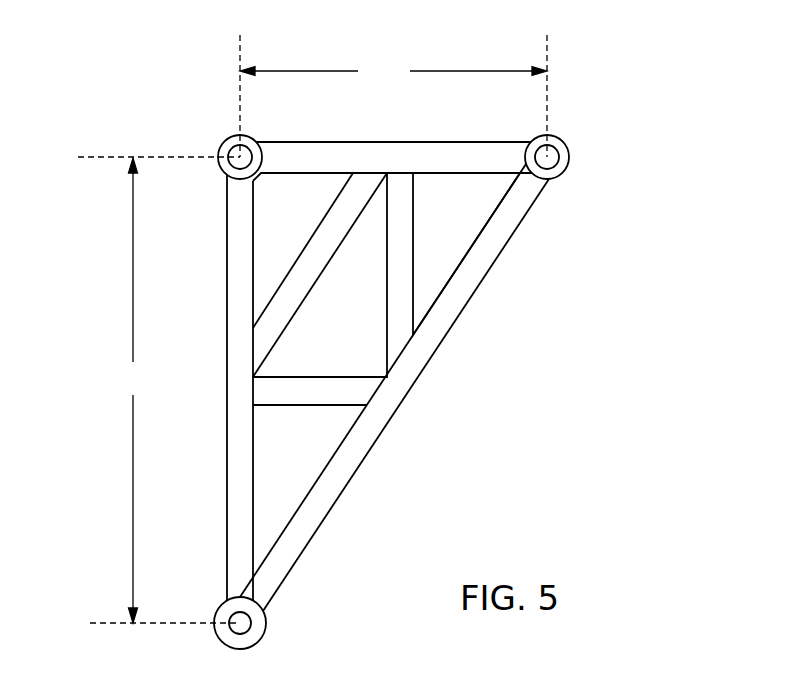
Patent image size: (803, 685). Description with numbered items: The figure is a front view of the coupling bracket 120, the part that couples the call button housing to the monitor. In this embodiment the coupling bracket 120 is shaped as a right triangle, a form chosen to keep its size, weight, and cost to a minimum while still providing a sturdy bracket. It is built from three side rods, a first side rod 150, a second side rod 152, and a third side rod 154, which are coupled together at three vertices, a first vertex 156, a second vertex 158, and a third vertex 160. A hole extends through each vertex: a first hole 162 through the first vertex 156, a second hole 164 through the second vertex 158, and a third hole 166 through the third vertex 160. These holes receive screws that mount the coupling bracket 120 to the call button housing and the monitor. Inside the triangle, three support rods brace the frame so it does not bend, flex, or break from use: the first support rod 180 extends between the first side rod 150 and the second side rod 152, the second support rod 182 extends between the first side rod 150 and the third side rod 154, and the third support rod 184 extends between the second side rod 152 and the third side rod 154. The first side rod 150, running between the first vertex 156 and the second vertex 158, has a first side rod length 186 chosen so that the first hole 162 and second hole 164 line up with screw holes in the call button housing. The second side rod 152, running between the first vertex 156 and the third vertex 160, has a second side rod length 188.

The coupling bracket 120 is at (603, 66).
The first side rod 150 is at (368, 157).
The second side rod 152 is at (233, 338).
The third side rod 154 is at (413, 365).
The first vertex 156 is at (240, 155).
The second vertex 158 is at (563, 177).
The third vertex 160 is at (257, 630).
The first hole 162 is at (238, 157).
The second hole 164 is at (549, 157).
The third hole 166 is at (240, 620).
The first support rod 180 is at (302, 280).
The second support rod 182 is at (408, 262).
The third support rod 184 is at (303, 388).
The first side rod length 186 is at (393, 96).
The second side rod length 188 is at (159, 390).